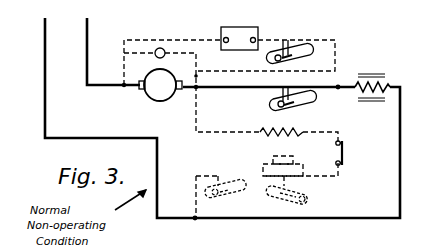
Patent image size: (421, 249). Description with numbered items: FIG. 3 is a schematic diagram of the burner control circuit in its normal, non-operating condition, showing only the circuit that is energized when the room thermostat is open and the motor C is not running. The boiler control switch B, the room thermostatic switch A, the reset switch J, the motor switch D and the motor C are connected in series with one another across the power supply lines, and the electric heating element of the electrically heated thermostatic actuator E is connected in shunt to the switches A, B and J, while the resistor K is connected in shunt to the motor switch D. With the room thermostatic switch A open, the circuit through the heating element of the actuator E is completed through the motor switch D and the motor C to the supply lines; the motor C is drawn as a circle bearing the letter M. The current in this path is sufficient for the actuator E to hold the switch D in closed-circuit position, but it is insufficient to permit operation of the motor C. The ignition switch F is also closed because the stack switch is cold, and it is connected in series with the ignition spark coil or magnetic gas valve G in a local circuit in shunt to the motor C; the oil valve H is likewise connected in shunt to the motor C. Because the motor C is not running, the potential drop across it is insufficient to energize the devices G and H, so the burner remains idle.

The room thermostatic switch A is at (294, 199).
The boiler control switch B is at (225, 196).
The motor C is at (160, 93).
The motor symbol M is at (160, 85).
The motor switch D is at (297, 99).
The electric thermal relay or actuator E is at (378, 83).
The ignition switch F is at (297, 36).
The ignition spark coil or magnetic gas valve G is at (239, 30).
The oil valve H is at (165, 50).
The reset switch J is at (346, 153).
The resistor K is at (276, 125).